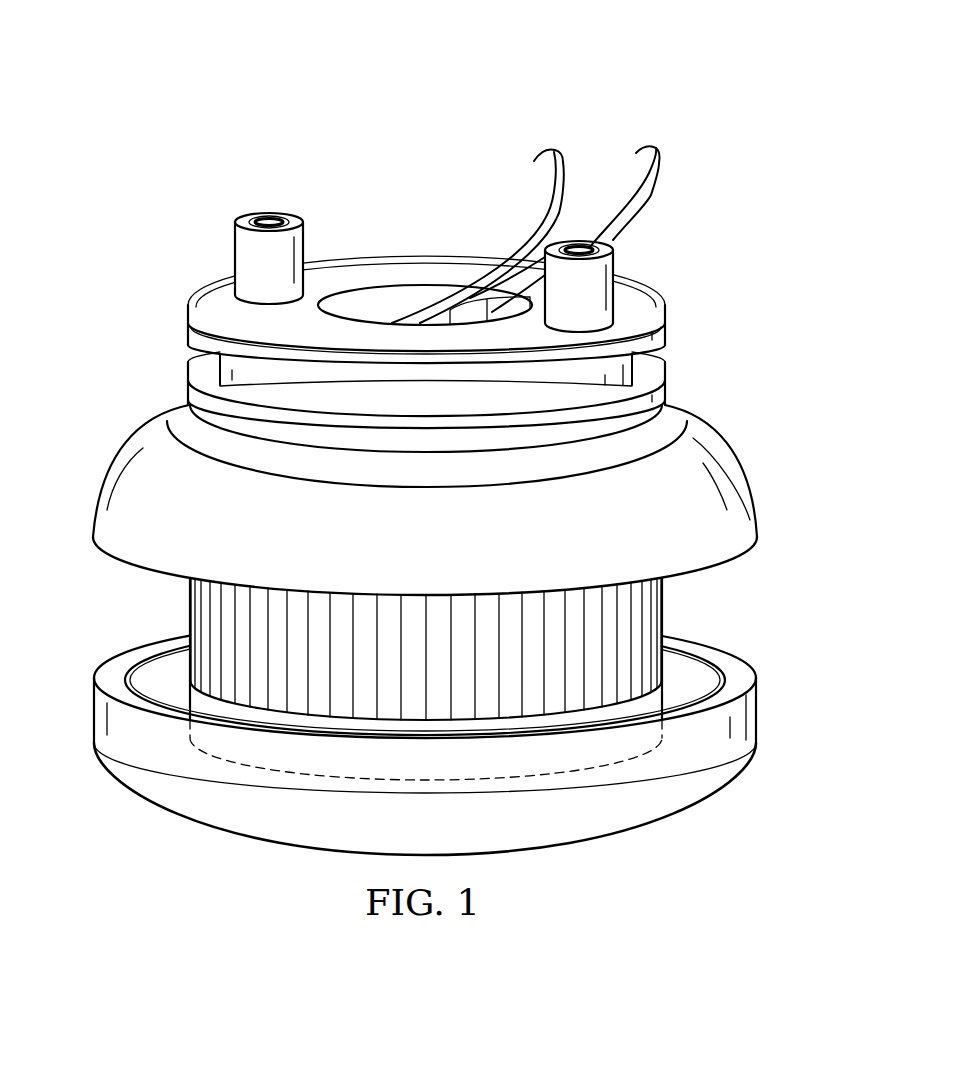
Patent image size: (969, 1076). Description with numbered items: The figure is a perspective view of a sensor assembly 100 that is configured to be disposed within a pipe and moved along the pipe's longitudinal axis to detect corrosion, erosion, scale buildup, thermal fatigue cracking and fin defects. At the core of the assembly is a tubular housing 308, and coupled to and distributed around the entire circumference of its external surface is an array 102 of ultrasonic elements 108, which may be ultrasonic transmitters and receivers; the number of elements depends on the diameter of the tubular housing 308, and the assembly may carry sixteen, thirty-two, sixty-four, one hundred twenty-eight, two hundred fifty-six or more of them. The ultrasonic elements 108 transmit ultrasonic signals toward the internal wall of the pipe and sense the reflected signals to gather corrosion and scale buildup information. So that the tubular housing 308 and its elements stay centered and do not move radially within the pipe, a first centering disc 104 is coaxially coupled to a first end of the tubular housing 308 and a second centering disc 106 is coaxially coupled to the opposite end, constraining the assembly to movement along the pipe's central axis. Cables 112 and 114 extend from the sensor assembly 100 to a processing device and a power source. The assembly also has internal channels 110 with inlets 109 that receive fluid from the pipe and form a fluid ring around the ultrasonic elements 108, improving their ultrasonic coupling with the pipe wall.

The sensor assembly 100 is at (310, 80).
The array 102 is at (663, 607).
The first centering disc 104 is at (737, 468).
The second centering disc 106 is at (758, 706).
The ultrasonic elements 108 is at (190, 613).
The inlets 109 is at (268, 220).
The internal channels 110 is at (233, 258).
The cable 112 is at (533, 230).
The cable 114 is at (652, 180).
The tubular housing 308 is at (214, 659).